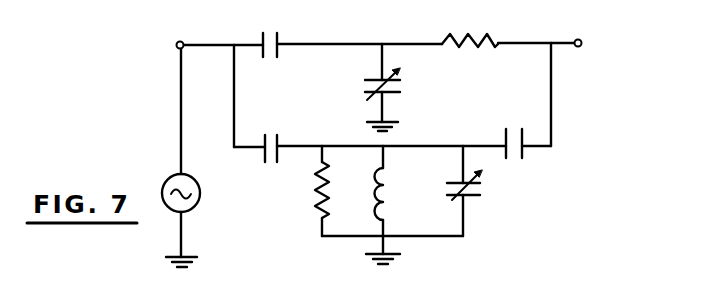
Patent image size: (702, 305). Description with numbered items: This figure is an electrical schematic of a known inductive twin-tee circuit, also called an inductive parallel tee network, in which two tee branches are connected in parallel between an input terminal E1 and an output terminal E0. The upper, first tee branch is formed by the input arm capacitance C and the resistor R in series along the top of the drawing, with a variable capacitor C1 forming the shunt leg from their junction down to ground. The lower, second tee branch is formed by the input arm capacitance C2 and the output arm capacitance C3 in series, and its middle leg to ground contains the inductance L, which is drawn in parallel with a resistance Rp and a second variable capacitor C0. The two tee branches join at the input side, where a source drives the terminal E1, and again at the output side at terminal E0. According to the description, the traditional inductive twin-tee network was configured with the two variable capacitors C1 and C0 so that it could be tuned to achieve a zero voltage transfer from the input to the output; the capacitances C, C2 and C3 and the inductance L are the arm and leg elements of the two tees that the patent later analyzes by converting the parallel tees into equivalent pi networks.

The input voltage terminal E1 is at (216, 95).
The input arm capacitance of first tee branch C is at (270, 35).
The series resistor R is at (470, 30).
The output voltage terminal E0 is at (571, 80).
The variable capacitor C1 is at (396, 87).
The input arm capacitance of second tee branch C2 is at (272, 137).
The output arm capacitance of second tee branch C3 is at (526, 133).
The parallel resistor of tank circuit Rp is at (334, 191).
The middle leg inductance of second tee branch L is at (394, 200).
The variable capacitor C0 is at (479, 191).